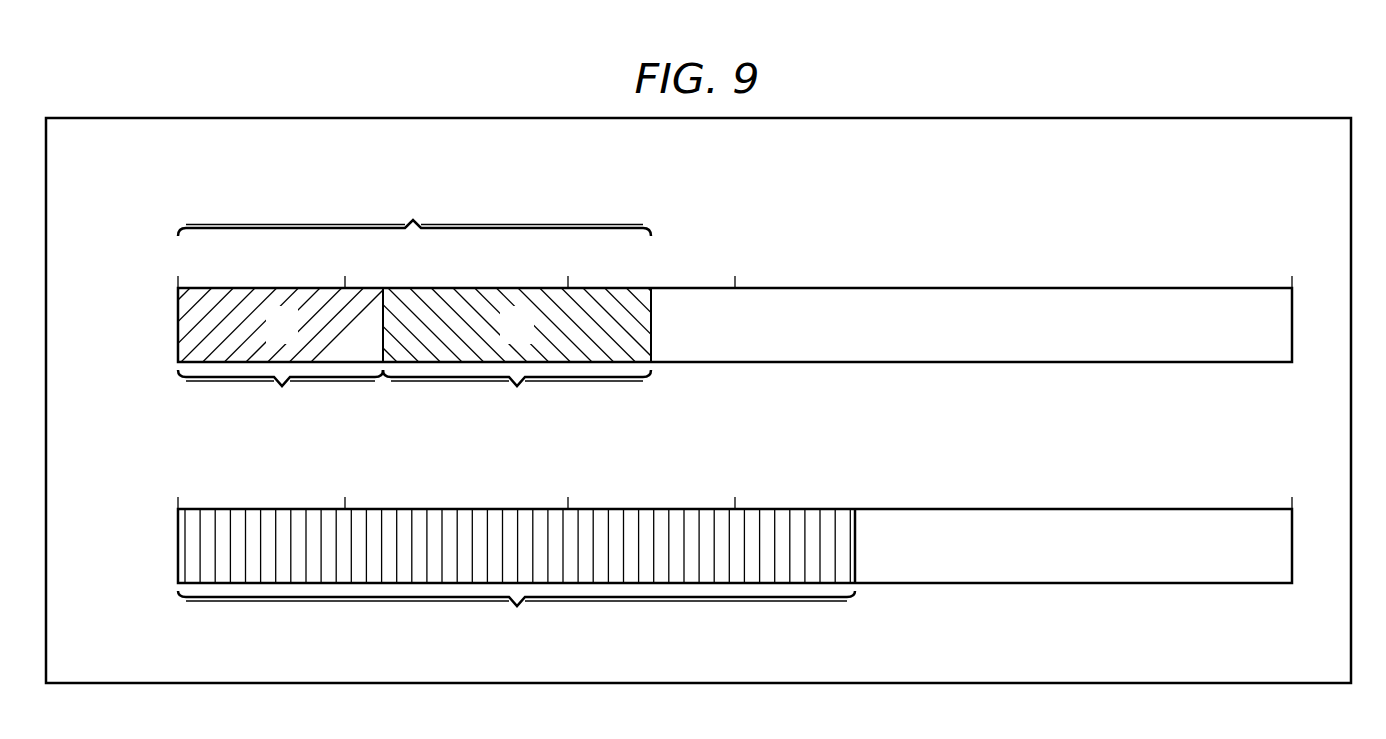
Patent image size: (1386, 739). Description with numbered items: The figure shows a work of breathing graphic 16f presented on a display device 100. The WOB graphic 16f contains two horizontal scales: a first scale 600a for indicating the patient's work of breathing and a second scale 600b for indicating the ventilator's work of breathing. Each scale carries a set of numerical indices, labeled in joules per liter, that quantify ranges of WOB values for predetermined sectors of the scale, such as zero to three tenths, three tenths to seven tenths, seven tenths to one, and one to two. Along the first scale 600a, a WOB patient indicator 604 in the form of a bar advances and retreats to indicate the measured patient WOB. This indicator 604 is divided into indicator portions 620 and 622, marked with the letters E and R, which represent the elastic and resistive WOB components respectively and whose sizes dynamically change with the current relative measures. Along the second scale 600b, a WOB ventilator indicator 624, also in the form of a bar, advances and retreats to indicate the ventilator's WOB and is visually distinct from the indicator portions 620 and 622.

The display device 100 is at (941, 114).
The WOB graphic 16f is at (1090, 215).
The first scale 600a is at (882, 258).
The second scale 600b is at (882, 616).
The WOB patient indicator 604 is at (414, 213).
The indicator portion 620 is at (280, 396).
The indicator portion 622 is at (517, 396).
The WOB ventilator indicator 624 is at (516, 619).